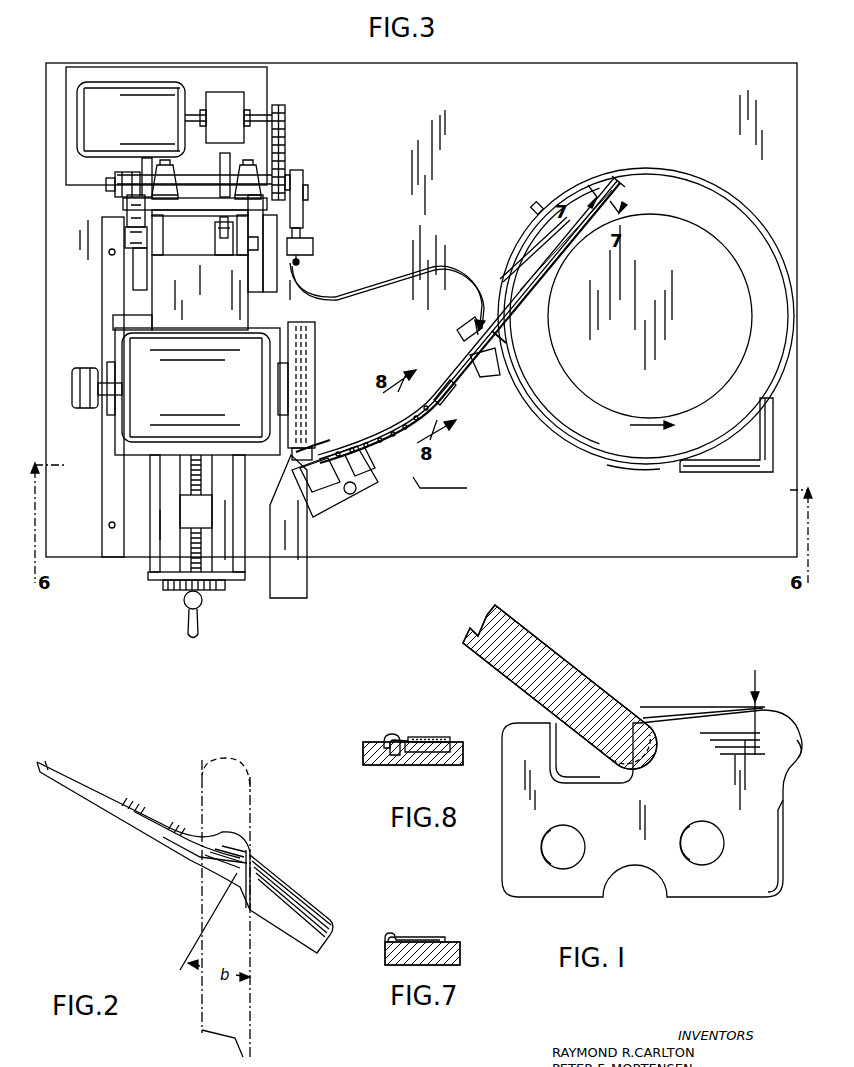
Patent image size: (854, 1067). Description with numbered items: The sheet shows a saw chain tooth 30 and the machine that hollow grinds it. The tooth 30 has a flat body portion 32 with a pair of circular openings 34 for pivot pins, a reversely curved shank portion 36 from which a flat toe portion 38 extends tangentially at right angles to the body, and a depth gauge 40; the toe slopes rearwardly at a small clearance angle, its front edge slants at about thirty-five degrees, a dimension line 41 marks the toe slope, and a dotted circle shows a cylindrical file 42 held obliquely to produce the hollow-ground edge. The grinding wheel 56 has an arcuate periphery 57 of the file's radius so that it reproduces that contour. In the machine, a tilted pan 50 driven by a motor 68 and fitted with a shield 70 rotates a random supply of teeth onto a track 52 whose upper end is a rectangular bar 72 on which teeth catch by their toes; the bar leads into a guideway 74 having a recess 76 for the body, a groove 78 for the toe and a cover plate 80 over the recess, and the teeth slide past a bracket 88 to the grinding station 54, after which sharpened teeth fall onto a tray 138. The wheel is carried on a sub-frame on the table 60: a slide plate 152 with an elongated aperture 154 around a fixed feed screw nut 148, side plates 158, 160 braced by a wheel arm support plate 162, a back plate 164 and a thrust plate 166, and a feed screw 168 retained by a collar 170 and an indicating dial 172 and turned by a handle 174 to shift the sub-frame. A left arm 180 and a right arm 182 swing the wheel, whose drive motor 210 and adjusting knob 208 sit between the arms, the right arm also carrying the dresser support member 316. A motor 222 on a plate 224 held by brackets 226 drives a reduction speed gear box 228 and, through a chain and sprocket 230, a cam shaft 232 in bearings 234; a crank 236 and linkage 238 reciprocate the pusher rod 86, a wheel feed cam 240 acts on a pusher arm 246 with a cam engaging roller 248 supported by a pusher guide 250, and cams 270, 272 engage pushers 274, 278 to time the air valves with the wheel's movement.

In FIG. 2, the saw chain tooth 30 is at (188, 857).
In FIG. 1, the saw chain tooth 30 is at (637, 814).
In FIG. 8, the saw chain tooth 30 is at (400, 735).
In FIG. 7, the saw chain tooth 30 is at (419, 930).
In FIG. 2, the body portion 32 is at (115, 810).
In FIG. 1, the body portion 32 is at (520, 882).
In FIG. 1, the circular openings 34 is at (682, 847).
In FIG. 1, the shank portion 36 is at (798, 757).
In FIG. 2, the toe portion 38 is at (300, 912).
In FIG. 1, the toe portion 38 is at (765, 720).
In FIG. 2, the depth gauge 40 is at (172, 858).
In FIG. 1, the depth gauge 40 is at (522, 733).
In FIG. 1, the edge 41 is at (720, 706).
In FIG. 1, the cylindrical file 42 is at (578, 775).
In FIG. 3, the pan 50 is at (647, 170).
In FIG. 3, the track 52 is at (462, 391).
In FIG. 3, the grinding station 54 is at (355, 497).
In FIG. 3, the grinding wheel 56 is at (310, 452).
In FIG. 2, the grinding wheel 56 is at (260, 1008).
In FIG. 1, the grinding wheel 56 is at (530, 640).
In FIG. 2, the arcuate periphery 57 is at (242, 760).
In FIG. 1, the arcuate periphery 57 is at (645, 770).
In FIG. 3, the table 60 is at (553, 552).
In FIG. 3, the motor 68 is at (740, 460).
In FIG. 3, the shield 70 is at (610, 468).
In FIG. 3, the rectangular bar 72 is at (613, 192).
In FIG. 7, the rectangular bar 72 is at (462, 950).
In FIG. 3, the guideway 74 is at (540, 300).
In FIG. 8, the guideway 74 is at (465, 756).
In FIG. 8, the recess 76 is at (442, 765).
In FIG. 8, the groove 78 is at (392, 760).
In FIG. 3, the cover plate 80 is at (506, 338).
In FIG. 8, the cover plate 80 is at (428, 737).
In FIG. 3, the pusher rod 86 is at (483, 300).
In FIG. 3, the pawl 88 is at (458, 342).
In FIG. 3, the tray 138 is at (297, 583).
In FIG. 3, the feed screw nut 148 is at (205, 518).
In FIG. 3, the slide plate 152 is at (225, 495).
In FIG. 3, the elongated aperture 154 is at (188, 472).
In FIG. 3, the left side plate 158 is at (150, 568).
In FIG. 3, the right side plate 160 is at (240, 572).
In FIG. 3, the wheel arm support plate 162 is at (117, 332).
In FIG. 3, the back plate 164 is at (206, 213).
In FIG. 3, the thrust plate 166 is at (163, 577).
In FIG. 3, the feed screw 168 is at (192, 538).
In FIG. 3, the collar 170 is at (205, 585).
In FIG. 3, the indicating dial 172 is at (178, 588).
In FIG. 3, the handle 174 is at (196, 626).
In FIG. 3, the left arm 180 is at (108, 366).
In FIG. 3, the right arm 182 is at (302, 368).
In FIG. 3, the knob 208 is at (82, 410).
In FIG. 3, the motor 210 is at (207, 386).
In FIG. 3, the motor 222 is at (122, 90).
In FIG. 3, the plate 224 is at (212, 70).
In FIG. 3, the brackets 226 is at (260, 288).
In FIG. 3, the reduction speed gear box 228 is at (223, 102).
In FIG. 3, the chain and sprocket 230 is at (286, 148).
In FIG. 3, the cam shaft 232 is at (208, 177).
In FIG. 3, the bearings 234 is at (255, 165).
In FIG. 3, the crank 236 is at (297, 180).
In FIG. 3, the linkage 238 is at (298, 216).
In FIG. 3, the wheel feed cam 240 is at (220, 157).
In FIG. 3, the pusher arm 246 is at (181, 263).
In FIG. 3, the cam engaging roller 248 is at (215, 238).
In FIG. 3, the pusher guide 250 is at (226, 253).
In FIG. 3, the cam 270 is at (118, 170).
In FIG. 3, the cam 272 is at (118, 194).
In FIG. 3, the pusher 274 is at (125, 237).
In FIG. 3, the pusher 278 is at (127, 219).
In FIG. 3, the support member 316 is at (313, 405).